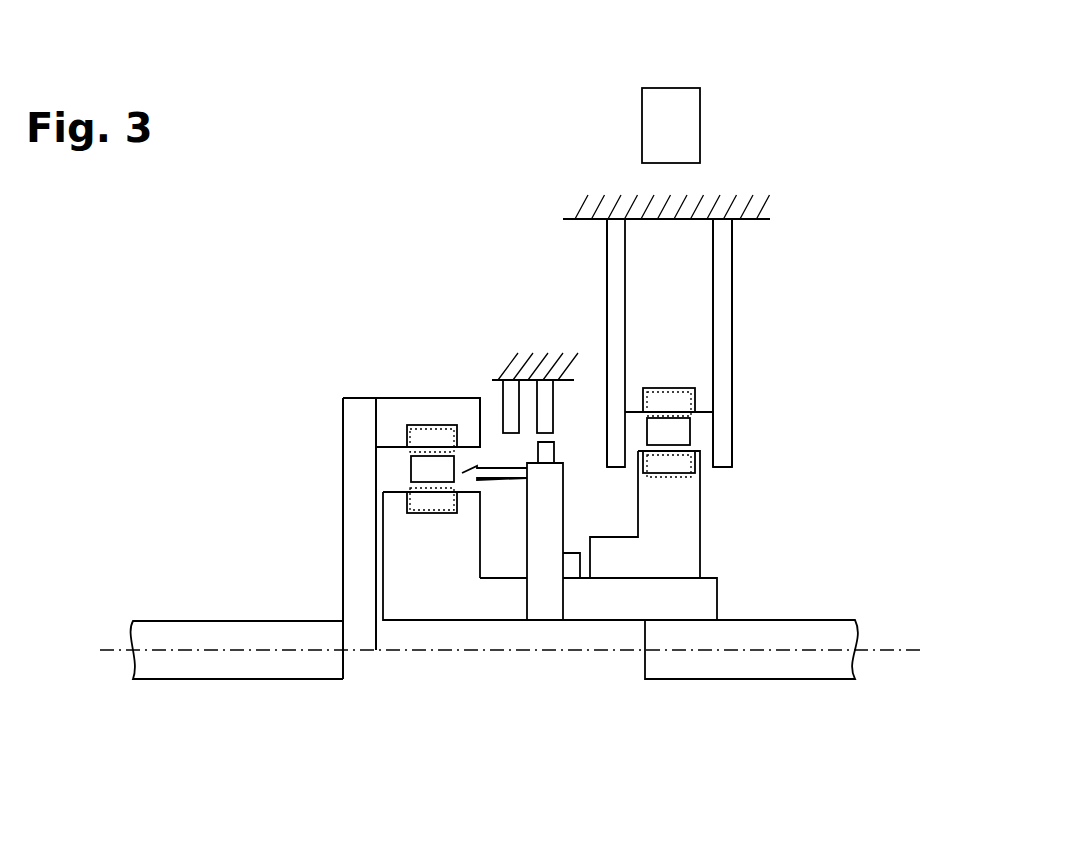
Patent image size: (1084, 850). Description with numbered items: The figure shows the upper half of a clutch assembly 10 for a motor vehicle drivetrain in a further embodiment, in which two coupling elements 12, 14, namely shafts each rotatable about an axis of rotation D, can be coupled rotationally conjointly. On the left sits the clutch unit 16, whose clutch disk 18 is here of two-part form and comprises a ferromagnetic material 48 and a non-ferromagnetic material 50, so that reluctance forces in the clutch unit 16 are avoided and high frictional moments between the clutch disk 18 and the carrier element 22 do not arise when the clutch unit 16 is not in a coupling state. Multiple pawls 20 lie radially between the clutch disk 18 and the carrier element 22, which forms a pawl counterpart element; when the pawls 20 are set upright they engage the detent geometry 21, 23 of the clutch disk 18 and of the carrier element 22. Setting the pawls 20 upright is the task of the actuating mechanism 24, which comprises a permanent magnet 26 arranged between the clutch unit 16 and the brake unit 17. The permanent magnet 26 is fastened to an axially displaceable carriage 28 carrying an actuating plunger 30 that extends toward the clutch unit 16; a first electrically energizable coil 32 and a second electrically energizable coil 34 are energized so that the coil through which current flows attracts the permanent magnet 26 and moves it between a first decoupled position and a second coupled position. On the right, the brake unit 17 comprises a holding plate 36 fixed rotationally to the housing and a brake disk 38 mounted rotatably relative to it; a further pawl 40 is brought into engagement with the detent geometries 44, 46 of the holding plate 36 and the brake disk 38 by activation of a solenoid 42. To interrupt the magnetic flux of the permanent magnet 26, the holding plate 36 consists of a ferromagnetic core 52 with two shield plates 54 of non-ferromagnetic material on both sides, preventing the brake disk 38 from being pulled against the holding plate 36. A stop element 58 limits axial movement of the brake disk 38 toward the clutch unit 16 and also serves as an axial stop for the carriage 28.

The clutch assembly 10 is at (790, 152).
The coupling element 12 is at (293, 663).
The coupling element 14 is at (778, 658).
The clutch unit 16 is at (368, 365).
The brake unit 17 is at (865, 253).
The clutch disk 18 is at (355, 434).
The pawls 20 is at (430, 472).
The detent geometry 21 is at (427, 430).
The carrier element 22 is at (409, 586).
The detent geometry 23 is at (430, 515).
The actuating mechanism 24 is at (523, 308).
The permanent magnet 26 is at (547, 452).
The carriage 28 is at (545, 540).
The actuating plunger 30 is at (503, 476).
The first electrically energizable coil 32 is at (545, 407).
The second electrically energizable coil 34 is at (512, 407).
The holding plate 36 is at (687, 277).
The brake disk 38 is at (682, 542).
The pawl 40 is at (670, 430).
The solenoid 42 is at (670, 123).
The detent geometry 44 is at (668, 387).
The detent geometry 46 is at (670, 473).
The ferromagnetic material 48 is at (392, 413).
The non-ferromagnetic material 50 is at (355, 468).
The ferromagnetic core 52 is at (670, 330).
The shield plates 54 is at (727, 238).
The stop element 58 is at (570, 568).
The axis of rotation D is at (117, 650).